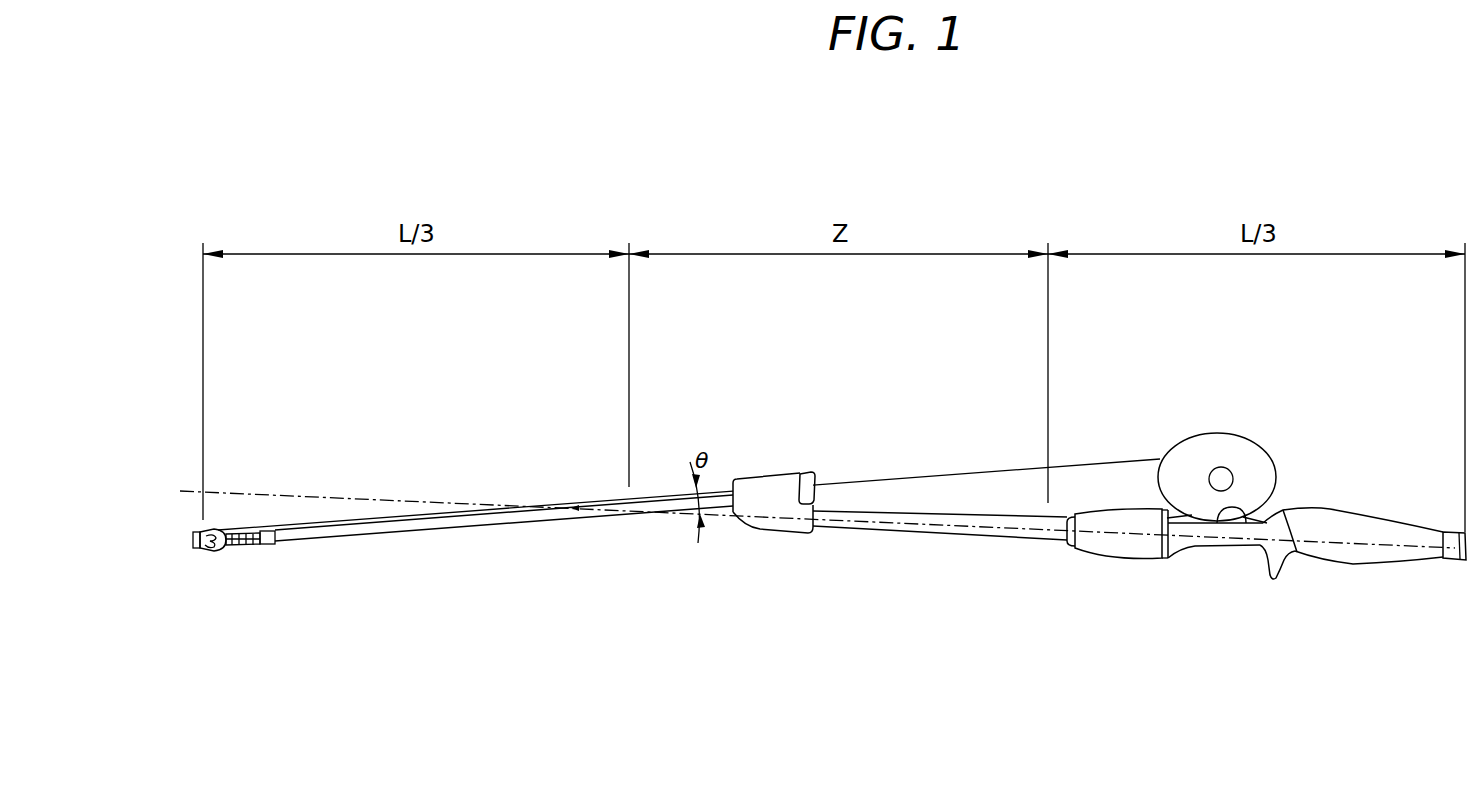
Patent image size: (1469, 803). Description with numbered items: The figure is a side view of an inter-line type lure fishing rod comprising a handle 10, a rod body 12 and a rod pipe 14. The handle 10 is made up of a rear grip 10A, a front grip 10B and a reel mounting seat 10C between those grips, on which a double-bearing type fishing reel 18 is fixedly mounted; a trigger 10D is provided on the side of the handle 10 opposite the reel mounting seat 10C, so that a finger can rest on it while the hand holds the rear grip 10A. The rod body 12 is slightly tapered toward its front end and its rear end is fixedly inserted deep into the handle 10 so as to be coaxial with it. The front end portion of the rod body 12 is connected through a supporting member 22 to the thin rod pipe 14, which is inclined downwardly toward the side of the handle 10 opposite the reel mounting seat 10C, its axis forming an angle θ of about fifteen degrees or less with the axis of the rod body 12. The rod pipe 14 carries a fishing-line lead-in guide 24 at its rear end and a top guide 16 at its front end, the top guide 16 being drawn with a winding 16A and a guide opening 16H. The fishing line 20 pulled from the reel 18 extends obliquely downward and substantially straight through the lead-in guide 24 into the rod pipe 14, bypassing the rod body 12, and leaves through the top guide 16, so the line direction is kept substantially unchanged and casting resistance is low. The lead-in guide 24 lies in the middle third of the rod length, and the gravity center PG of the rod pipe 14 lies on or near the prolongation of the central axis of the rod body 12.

The handle 10 is at (1266, 616).
The rear grip 10A is at (1364, 588).
The front grip 10B is at (1122, 545).
The reel mounting seat 10C is at (1223, 510).
The trigger 10D is at (1277, 578).
The rod body 12 is at (935, 530).
The rod pipe 14 is at (433, 522).
The top guide 16 is at (248, 597).
The guide winding 16A is at (218, 551).
The guide ring hole 16H is at (197, 546).
The double-bearing type fishing reel 18 is at (1247, 438).
The fishing line 20 is at (938, 475).
The supporting member 22 is at (768, 523).
The fishing-line lead-in guide 24 is at (805, 472).
The gravity center of the rod pipe PG is at (576, 510).